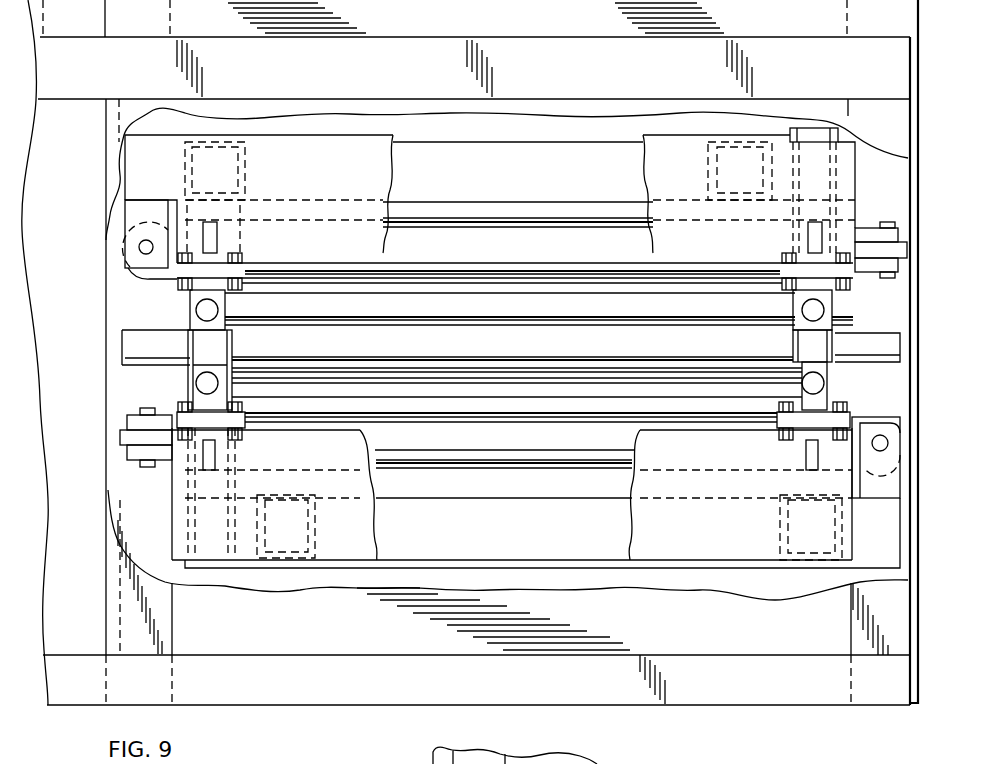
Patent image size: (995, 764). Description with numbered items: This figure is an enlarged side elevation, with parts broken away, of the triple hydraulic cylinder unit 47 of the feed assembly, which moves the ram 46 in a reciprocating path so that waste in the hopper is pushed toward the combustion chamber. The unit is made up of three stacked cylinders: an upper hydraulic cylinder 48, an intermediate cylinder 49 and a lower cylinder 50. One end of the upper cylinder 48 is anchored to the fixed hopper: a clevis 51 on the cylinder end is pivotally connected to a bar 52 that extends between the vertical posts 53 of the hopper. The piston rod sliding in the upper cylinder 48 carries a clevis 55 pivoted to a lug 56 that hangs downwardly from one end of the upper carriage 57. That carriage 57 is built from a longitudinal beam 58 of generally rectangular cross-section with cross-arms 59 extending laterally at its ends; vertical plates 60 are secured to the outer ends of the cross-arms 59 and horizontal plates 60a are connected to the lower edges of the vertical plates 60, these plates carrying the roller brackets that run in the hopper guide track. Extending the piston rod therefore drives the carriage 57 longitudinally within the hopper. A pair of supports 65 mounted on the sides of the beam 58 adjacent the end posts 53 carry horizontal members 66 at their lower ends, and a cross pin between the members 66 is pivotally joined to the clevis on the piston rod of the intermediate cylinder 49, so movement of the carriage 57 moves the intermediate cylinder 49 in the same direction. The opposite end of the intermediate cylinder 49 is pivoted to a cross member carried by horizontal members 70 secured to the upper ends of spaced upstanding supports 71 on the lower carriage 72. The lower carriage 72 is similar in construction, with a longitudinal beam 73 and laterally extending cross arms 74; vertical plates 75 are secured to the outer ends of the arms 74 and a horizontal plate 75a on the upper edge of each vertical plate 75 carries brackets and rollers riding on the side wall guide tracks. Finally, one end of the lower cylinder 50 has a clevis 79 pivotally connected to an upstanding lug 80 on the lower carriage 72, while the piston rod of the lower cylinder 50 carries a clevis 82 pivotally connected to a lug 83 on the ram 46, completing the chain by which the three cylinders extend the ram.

The ram 46 is at (102, 344).
The triple hydraulic cylinder unit 47 is at (535, 130).
The upper hydraulic cylinder 48 is at (575, 220).
The intermediate cylinder 49 is at (570, 332).
The lower cylinder 50 is at (561, 442).
The clevis 51 is at (888, 233).
The bar 52 is at (902, 272).
The vertical posts 53 is at (910, 310).
The clevis 55 is at (172, 268).
The lug 56 is at (132, 214).
The upper carriage 57 is at (488, 135).
The longitudinal beam 58 is at (432, 148).
The cross-arms 59 is at (740, 147).
The vertical plates 60 is at (383, 181).
The horizontal plates 60a is at (357, 263).
The supports 65 is at (812, 130).
The horizontal members 66 is at (886, 348).
The horizontal members 70 is at (145, 352).
The upstanding supports 71 is at (118, 498).
The lower carriage 72 is at (362, 572).
The longitudinal beam 73 is at (610, 550).
The cross arms 74 is at (284, 555).
The vertical plates 75 is at (366, 537).
The horizontal plate 75a is at (332, 426).
The clevis 79 is at (868, 423).
The upstanding lug 80 is at (894, 495).
The clevis 82 is at (138, 458).
The lug 83 is at (128, 440).